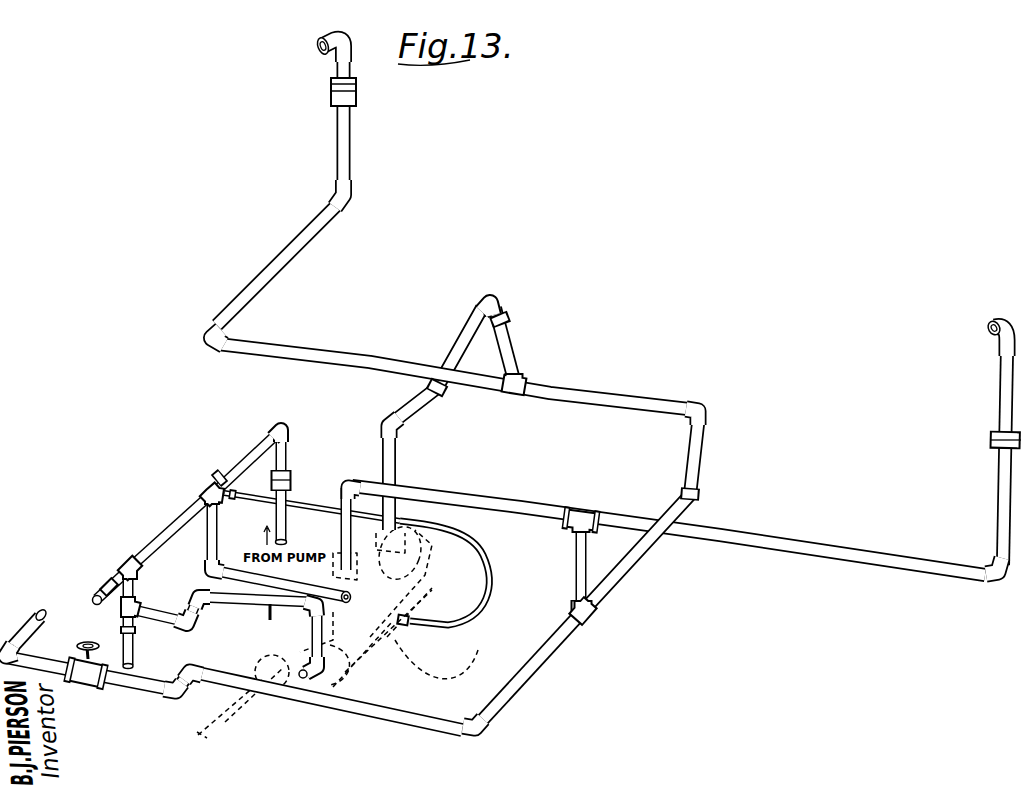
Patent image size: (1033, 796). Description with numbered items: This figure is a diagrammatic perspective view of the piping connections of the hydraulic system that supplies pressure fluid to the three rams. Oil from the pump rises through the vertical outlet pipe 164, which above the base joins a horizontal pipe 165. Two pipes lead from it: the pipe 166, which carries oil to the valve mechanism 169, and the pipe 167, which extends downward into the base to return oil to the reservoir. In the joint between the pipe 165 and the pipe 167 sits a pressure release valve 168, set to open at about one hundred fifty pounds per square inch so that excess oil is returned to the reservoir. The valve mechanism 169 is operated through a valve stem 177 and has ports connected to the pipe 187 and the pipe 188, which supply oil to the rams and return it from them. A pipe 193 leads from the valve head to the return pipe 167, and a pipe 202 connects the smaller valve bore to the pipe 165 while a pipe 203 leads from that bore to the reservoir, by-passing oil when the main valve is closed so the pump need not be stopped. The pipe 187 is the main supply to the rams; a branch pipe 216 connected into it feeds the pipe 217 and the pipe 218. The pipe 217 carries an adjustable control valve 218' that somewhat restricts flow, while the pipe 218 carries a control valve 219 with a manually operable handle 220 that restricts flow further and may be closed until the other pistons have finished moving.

The outlet pipe 164 is at (292, 454).
The horizontal pipe 165 is at (242, 450).
The pipe 166 is at (207, 532).
The pipe 167 is at (136, 597).
The pressure release valve 168 is at (140, 535).
The valve mechanism 169 is at (388, 640).
The valve stem 177 is at (233, 714).
The pipe 187 is at (342, 533).
The pipe 188 is at (393, 470).
The pipe 193 is at (347, 660).
The pipe 202 is at (480, 598).
The pipe 203 is at (268, 618).
The branch pipe 216 is at (575, 563).
The pipe 217 is at (352, 145).
The pipe 218 is at (297, 669).
The control valve 218' is at (371, 92).
The control valve 219 is at (100, 688).
The manually operable handle 220 is at (92, 642).